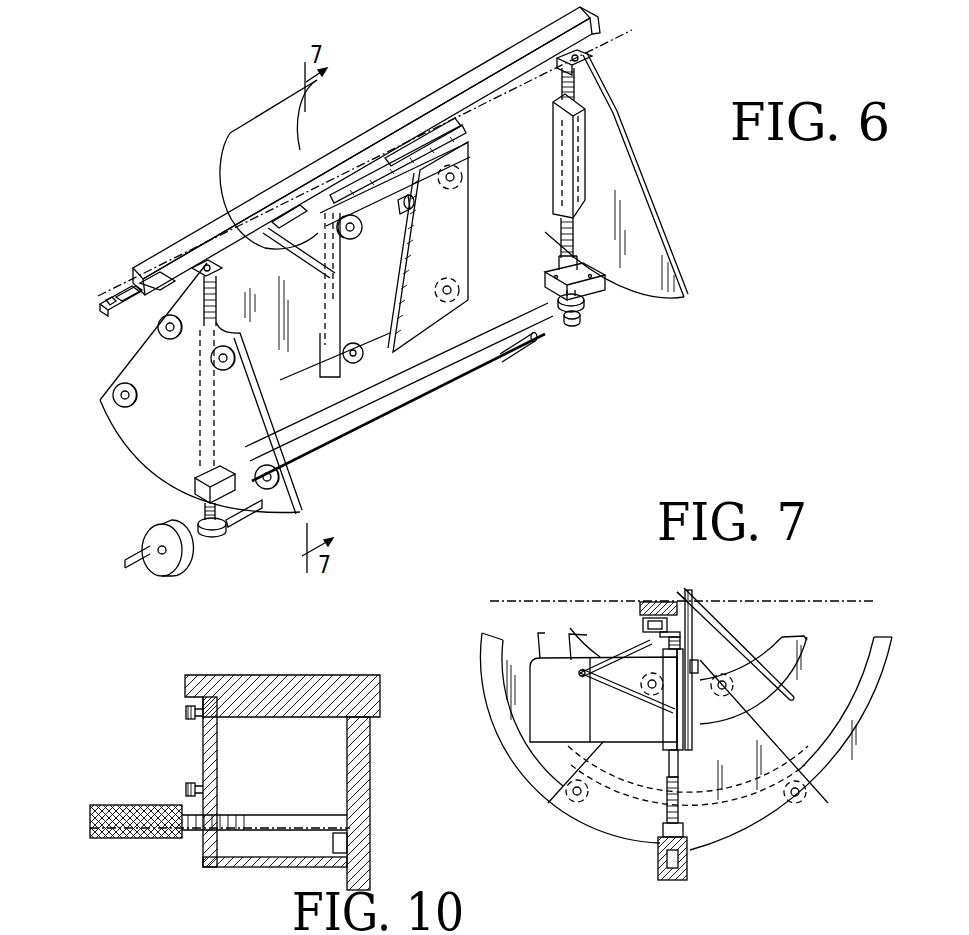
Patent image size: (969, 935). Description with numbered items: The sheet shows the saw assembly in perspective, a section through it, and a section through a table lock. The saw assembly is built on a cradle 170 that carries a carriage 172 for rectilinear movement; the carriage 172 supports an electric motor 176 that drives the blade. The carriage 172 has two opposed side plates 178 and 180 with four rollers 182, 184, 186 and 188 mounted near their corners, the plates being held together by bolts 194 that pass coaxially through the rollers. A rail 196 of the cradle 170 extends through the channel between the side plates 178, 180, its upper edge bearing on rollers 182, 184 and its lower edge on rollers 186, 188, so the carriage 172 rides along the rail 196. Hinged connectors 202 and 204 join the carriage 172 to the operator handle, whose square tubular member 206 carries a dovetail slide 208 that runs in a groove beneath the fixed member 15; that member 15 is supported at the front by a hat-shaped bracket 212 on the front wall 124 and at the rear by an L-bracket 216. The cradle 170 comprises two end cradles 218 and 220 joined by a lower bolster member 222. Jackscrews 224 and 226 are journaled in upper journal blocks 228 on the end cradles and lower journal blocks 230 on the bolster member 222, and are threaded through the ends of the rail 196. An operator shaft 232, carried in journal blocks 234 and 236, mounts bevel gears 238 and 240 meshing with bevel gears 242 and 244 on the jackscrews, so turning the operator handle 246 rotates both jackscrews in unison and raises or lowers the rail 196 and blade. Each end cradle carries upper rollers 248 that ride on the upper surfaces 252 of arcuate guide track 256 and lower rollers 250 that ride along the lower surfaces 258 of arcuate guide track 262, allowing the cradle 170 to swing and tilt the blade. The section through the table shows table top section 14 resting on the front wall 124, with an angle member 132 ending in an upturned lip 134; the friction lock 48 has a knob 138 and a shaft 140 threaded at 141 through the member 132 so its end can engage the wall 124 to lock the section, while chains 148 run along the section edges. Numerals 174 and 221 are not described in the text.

In FIG. 6, the member 15 is at (165, 255).
In FIG. 7, the member 15 is at (657, 600).
In FIG. 10, the table top section 14 is at (349, 675).
In FIG. 10, the friction lock 48 is at (137, 797).
In FIG. 10, the front wall 124 is at (372, 851).
In FIG. 10, the angle member 132 is at (226, 868).
In FIG. 10, the upturned lip portion 134 is at (334, 848).
In FIG. 10, the exterior knob 138 is at (158, 838).
In FIG. 10, the shaft 140 is at (307, 815).
In FIG. 10, the threads 141 is at (236, 815).
In FIG. 10, the endless chains 148 is at (189, 717).
In FIG. 6, the cradle 170 is at (120, 437).
In FIG. 6, the carriage 172 is at (535, 196).
In FIG. 6, the rail assembly 174 is at (123, 262).
In FIG. 6, the electric motor 176 is at (302, 147).
In FIG. 7, the electric motor 176 is at (582, 718).
In FIG. 6, the side plate 178 is at (455, 268).
In FIG. 6, the side plate 180 is at (459, 137).
In FIG. 6, the roller 182 is at (351, 240).
In FIG. 6, the roller 184 is at (497, 145).
In FIG. 6, the roller 186 is at (463, 398).
In FIG. 6, the roller 188 is at (357, 364).
In FIG. 6, the bolts 194 is at (470, 173).
In FIG. 6, the rail 196 is at (368, 315).
In FIG. 6, the hinged connector 202 is at (318, 176).
In FIG. 6, the hinged connector 204 is at (437, 126).
In FIG. 7, the hinged connector 204 is at (650, 664).
In FIG. 6, the tubular member 206 is at (100, 306).
In FIG. 7, the tubular member 206 is at (664, 628).
In FIG. 6, the dovetail slide 208 is at (112, 292).
In FIG. 7, the dovetail slide 208 is at (650, 605).
In FIG. 6, the hat-shaped bracket 212 is at (110, 312).
In FIG. 6, the L-bracket 216 is at (602, 34).
In FIG. 6, the end cradle 218 is at (163, 464).
In FIG. 6, the end cradle 220 is at (645, 201).
In FIG. 7, the end cradle 220 is at (767, 837).
In FIG. 6, the slide block 221 is at (284, 215).
In FIG. 6, the lower bolster member 222 is at (447, 302).
In FIG. 6, the jackscrew 224 is at (215, 292).
In FIG. 6, the jackscrew 226 is at (577, 82).
In FIG. 7, the jackscrew 226 is at (670, 818).
In FIG. 6, the journal blocks 228 is at (203, 265).
In FIG. 6, the journal blocks 230 is at (566, 262).
In FIG. 6, the operator shaft 232 is at (400, 408).
In FIG. 7, the operator shaft 232 is at (692, 875).
In FIG. 6, the journal block 234 is at (262, 512).
In FIG. 6, the journal block 236 is at (540, 338).
In FIG. 6, the bevel gear 238 is at (226, 532).
In FIG. 6, the bevel gear 240 is at (579, 320).
In FIG. 6, the bevel gear 242 is at (200, 498).
In FIG. 6, the bevel gear 244 is at (576, 305).
In FIG. 6, the operator handle 246 is at (175, 567).
In FIG. 6, the upper rollers 248 is at (222, 358).
In FIG. 7, the upper rollers 248 is at (657, 693).
In FIG. 6, the lower rollers 250 is at (262, 470).
In FIG. 7, the lower rollers 250 is at (812, 806).
In FIG. 7, the upper surfaces 252 is at (780, 641).
In FIG. 7, the arcuate guide track 256 is at (798, 638).
In FIG. 7, the lower surfaces 258 is at (817, 767).
In FIG. 7, the arcuate guide track 262 is at (866, 700).